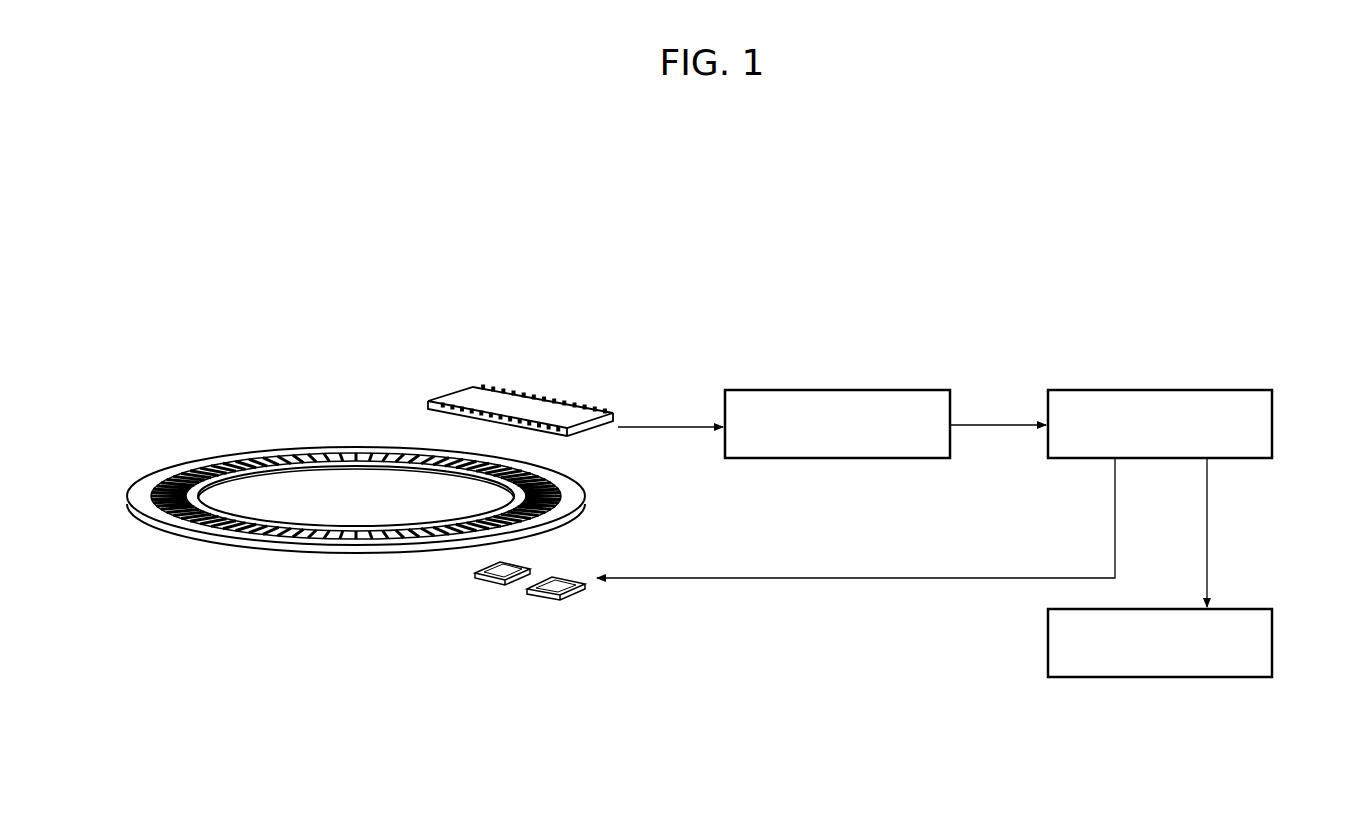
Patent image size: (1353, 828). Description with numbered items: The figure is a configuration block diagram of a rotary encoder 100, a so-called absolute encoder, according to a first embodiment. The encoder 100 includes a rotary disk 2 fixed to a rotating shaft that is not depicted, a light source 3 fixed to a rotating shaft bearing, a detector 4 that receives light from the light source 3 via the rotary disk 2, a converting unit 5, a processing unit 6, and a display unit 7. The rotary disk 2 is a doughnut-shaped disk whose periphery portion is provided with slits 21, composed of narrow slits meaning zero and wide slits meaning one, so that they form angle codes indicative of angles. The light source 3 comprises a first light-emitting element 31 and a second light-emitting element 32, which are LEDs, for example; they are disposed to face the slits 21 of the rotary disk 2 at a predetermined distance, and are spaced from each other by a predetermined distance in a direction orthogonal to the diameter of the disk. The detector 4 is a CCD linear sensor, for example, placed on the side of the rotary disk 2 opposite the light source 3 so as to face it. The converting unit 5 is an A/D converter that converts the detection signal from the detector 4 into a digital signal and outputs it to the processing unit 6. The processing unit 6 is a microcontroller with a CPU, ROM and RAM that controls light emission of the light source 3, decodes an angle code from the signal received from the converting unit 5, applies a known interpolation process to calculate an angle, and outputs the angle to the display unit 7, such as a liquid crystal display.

The rotary encoder 100 is at (758, 245).
The rotary disk 2 is at (307, 446).
The slits 21 is at (362, 390).
The detector 4 is at (568, 416).
The light source 3 is at (577, 653).
The first light-emitting element 31 is at (502, 581).
The second light-emitting element 32 is at (564, 591).
The converting unit 5 is at (918, 390).
The processing unit 6 is at (1239, 390).
The display unit 7 is at (1250, 609).